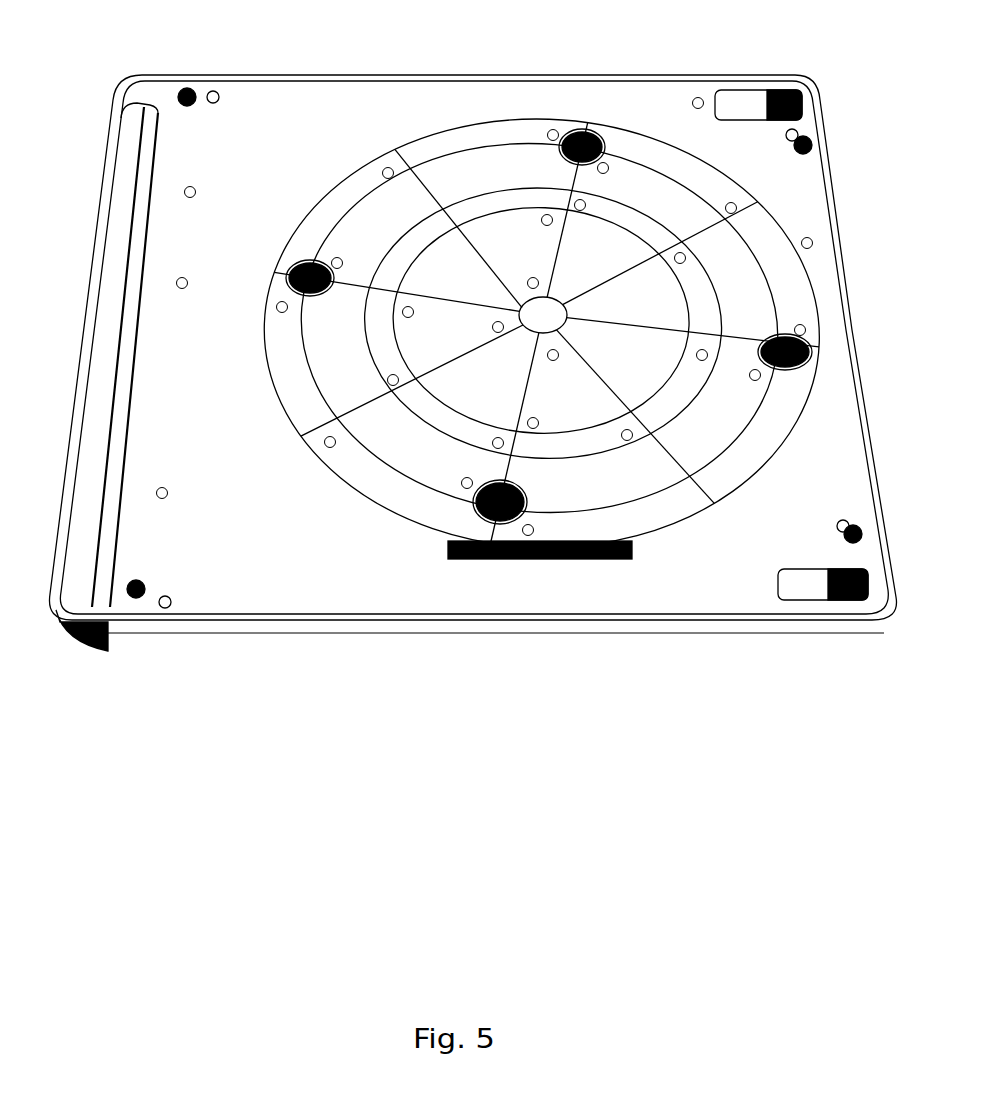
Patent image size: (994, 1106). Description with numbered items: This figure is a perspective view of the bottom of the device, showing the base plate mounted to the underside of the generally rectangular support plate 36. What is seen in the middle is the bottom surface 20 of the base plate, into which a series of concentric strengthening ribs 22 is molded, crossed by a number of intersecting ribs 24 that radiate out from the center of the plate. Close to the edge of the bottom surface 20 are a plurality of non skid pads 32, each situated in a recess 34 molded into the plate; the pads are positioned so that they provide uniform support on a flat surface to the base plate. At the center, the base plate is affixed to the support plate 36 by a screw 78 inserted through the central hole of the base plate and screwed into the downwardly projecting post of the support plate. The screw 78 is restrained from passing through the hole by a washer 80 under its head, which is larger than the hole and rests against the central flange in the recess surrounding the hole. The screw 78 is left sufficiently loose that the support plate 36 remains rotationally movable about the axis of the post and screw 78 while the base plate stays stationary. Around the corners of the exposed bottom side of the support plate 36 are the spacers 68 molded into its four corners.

The bottom surface 20 is at (568, 317).
The concentric strengthening ribs 22 is at (638, 163).
The intersecting ribs 24 is at (632, 443).
The non skid pads 32 is at (315, 262).
The recesses 34 is at (787, 334).
The support plate 36 is at (347, 610).
The spacers 68 is at (210, 95).
The screw 78 is at (541, 335).
The washer 80 is at (519, 318).